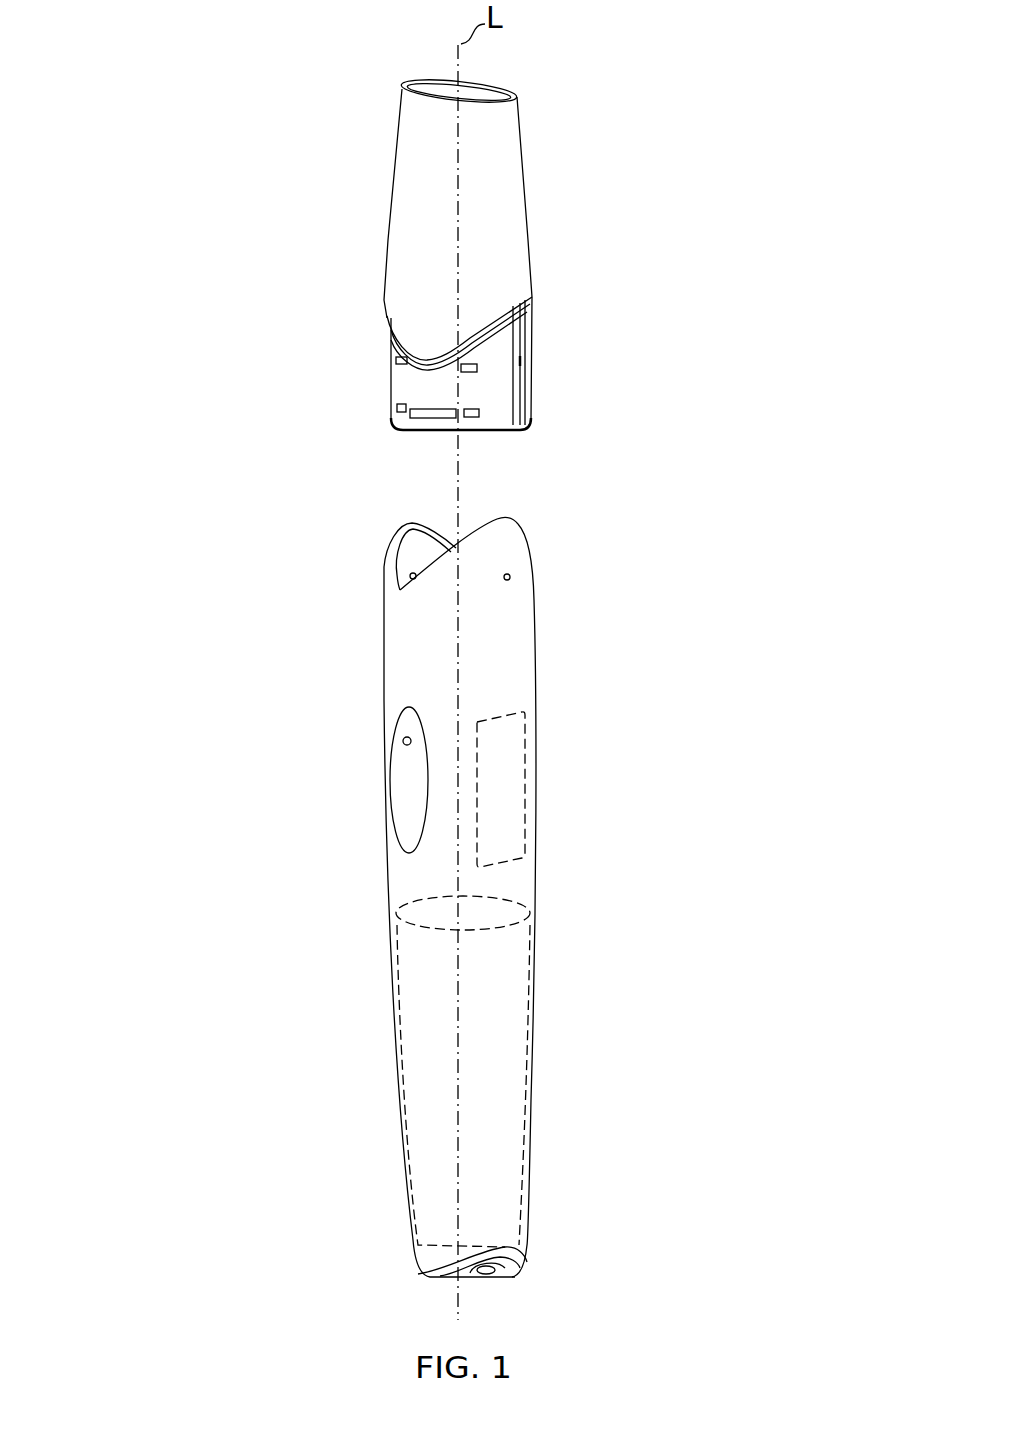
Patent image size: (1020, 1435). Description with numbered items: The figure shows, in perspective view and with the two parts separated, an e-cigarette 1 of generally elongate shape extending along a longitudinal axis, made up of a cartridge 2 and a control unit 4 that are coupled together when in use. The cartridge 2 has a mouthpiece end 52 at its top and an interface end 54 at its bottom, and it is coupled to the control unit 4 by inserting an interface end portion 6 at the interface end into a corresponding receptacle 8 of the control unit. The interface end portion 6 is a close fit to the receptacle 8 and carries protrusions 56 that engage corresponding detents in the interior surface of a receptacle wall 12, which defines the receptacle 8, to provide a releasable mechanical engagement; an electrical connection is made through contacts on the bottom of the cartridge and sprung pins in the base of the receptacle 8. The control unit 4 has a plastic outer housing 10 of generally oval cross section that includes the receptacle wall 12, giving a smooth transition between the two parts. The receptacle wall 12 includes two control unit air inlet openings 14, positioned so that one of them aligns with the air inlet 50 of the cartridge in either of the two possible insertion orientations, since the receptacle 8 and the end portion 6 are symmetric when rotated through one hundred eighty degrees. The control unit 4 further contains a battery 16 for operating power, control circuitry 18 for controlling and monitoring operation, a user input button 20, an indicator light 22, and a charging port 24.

The e-cigarette 1 is at (724, 232).
The cartridge 2 is at (280, 422).
The control unit 4 is at (238, 892).
The interface end portion 6 is at (372, 309).
The receptacle 8 is at (417, 550).
The outer housing 10 is at (538, 778).
The receptacle wall 12 is at (514, 540).
The control unit air inlet openings 14 is at (410, 576).
The battery 16 is at (530, 1018).
The control circuitry 18 is at (526, 728).
The user input button 20 is at (400, 805).
The indicator light 22 is at (404, 741).
The charging port 24 is at (488, 1277).
The air inlet 50 is at (528, 362).
The mouthpiece end 52 is at (470, 89).
The interface end 54 is at (493, 431).
The protrusions 56 is at (463, 371).